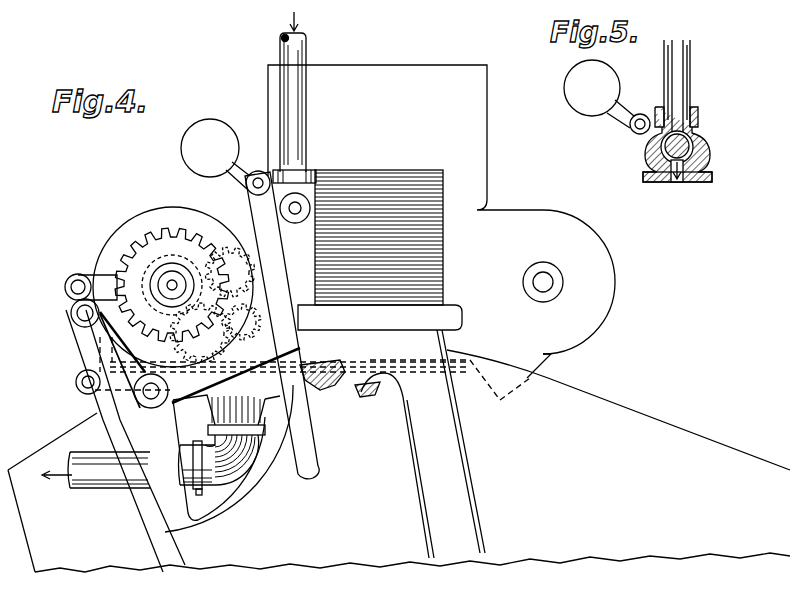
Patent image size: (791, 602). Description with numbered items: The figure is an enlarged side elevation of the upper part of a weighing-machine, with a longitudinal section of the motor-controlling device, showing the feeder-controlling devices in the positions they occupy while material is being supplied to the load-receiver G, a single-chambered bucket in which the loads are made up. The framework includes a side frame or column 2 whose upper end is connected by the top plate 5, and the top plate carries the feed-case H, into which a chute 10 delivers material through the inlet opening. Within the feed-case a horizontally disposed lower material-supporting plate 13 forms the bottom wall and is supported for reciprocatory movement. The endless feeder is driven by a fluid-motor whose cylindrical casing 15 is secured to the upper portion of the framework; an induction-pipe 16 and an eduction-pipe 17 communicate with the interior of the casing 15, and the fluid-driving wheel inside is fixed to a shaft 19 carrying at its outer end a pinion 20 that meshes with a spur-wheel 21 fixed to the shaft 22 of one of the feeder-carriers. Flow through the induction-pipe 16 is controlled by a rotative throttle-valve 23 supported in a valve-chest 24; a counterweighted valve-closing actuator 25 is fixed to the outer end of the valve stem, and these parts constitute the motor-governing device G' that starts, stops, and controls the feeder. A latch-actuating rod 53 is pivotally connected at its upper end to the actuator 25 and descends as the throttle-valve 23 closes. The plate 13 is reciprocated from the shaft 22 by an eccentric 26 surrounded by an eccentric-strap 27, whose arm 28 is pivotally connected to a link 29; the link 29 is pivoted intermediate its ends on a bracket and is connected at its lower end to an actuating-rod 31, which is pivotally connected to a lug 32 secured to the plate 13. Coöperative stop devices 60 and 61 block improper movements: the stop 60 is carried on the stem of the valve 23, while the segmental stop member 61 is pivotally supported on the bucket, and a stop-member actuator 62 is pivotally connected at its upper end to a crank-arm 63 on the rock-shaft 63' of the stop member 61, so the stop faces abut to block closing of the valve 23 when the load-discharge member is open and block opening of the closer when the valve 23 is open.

In FIG. 4, the side frame or column 2 is at (458, 457).
In FIG. 4, the top plate 5 is at (430, 170).
In FIG. 4, the chute 10 is at (457, 72).
In FIG. 4, the lower material-supporting plate 13 is at (380, 318).
In FIG. 4, the cylindrical casing 15 is at (262, 383).
In FIG. 4, the induction-pipe 16 is at (305, 108).
In FIG. 5, the induction-pipe 16 is at (686, 70).
In FIG. 4, the eduction-pipe 17 is at (100, 490).
In FIG. 4, the shaft 19 is at (241, 318).
In FIG. 4, the pinion 20 is at (240, 336).
In FIG. 4, the spur-wheel 21 is at (168, 240).
In FIG. 4, the shaft 22 is at (180, 296).
In FIG. 5, the throttle-valve 23 is at (692, 142).
In FIG. 4, the valve-chest 24 is at (312, 168).
In FIG. 5, the valve-chest 24 is at (700, 158).
In FIG. 4, the counterweighted valve-closing actuator 25 is at (210, 148).
In FIG. 5, the counterweighted valve-closing actuator 25 is at (592, 88).
In FIG. 4, the eccentric 26 is at (148, 250).
In FIG. 4, the eccentric-strap 27 is at (148, 266).
In FIG. 4, the arm 28 is at (100, 282).
In FIG. 4, the link 29 is at (100, 322).
In FIG. 4, the actuating-rod 31 is at (100, 395).
In FIG. 4, the lug 32 is at (185, 370).
In FIG. 4, the latch-actuating rod 53 is at (308, 452).
In FIG. 4, the stop device 60 is at (230, 245).
In FIG. 4, the stop member 61 is at (265, 473).
In FIG. 4, the stop-member actuator 62 is at (153, 512).
In FIG. 4, the crank-arm 63 is at (67, 346).
In FIG. 4, the rock-shaft 63' is at (152, 410).
In FIG. 4, the load-receiver G is at (399, 461).
In FIG. 4, the motor-governing device G' is at (248, 170).
In FIG. 5, the motor-governing device G' is at (628, 107).
In FIG. 4, the feed-case H is at (440, 236).